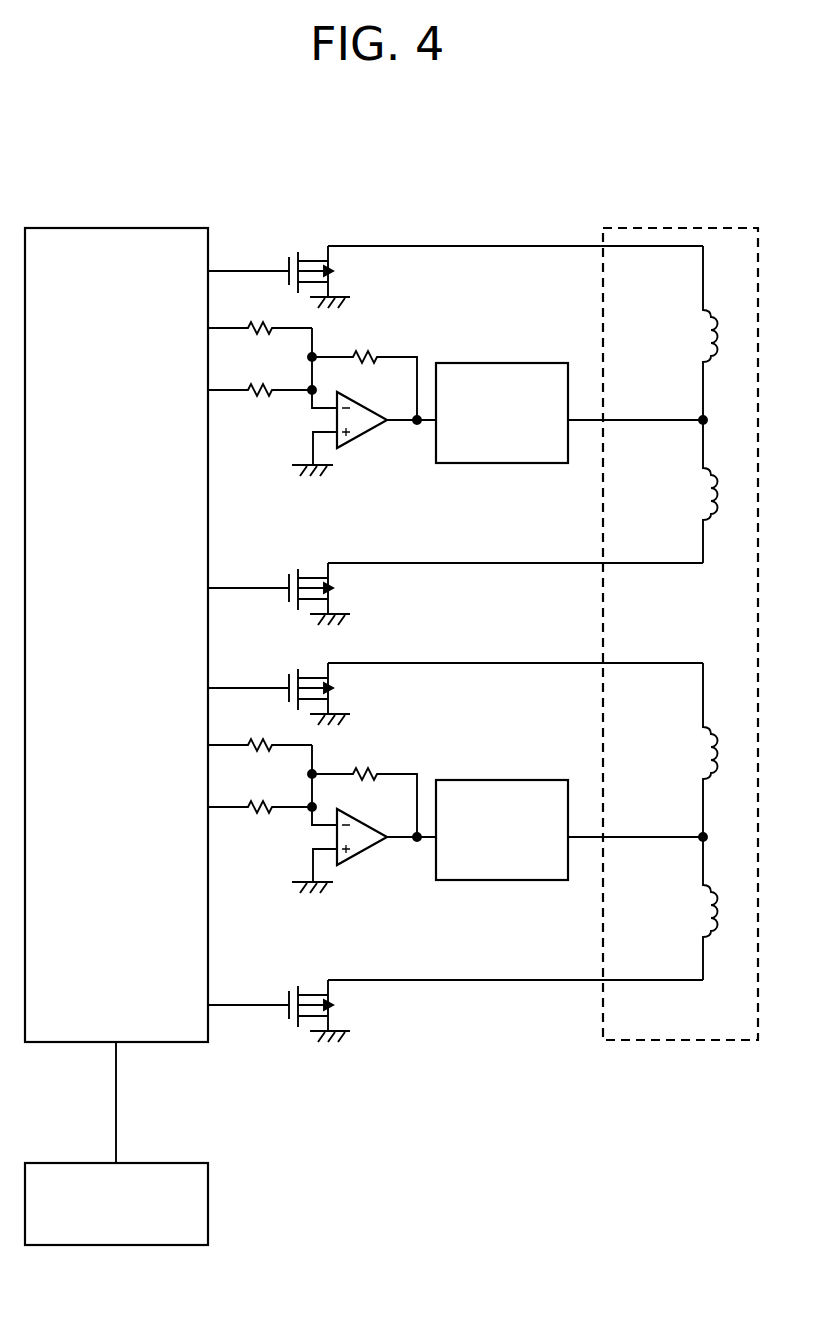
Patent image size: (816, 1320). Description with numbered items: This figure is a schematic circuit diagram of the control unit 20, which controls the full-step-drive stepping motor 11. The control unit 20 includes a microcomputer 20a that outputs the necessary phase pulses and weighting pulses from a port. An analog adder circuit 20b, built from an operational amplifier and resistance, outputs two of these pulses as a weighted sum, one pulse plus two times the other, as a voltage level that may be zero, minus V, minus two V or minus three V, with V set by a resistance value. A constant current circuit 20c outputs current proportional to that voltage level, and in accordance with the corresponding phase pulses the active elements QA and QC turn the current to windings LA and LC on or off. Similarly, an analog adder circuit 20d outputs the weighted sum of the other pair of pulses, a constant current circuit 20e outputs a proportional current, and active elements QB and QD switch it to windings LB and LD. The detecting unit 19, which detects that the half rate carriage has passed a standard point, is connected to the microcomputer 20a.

The control unit 20 is at (350, 203).
The microcomputer 20a is at (98, 228).
The analog adder circuit 20b is at (322, 819).
The constant current circuit 20c is at (571, 861).
The analog adder circuit 20d is at (298, 420).
The constant current circuit 20e is at (490, 463).
The stepping motor 11 is at (688, 228).
The detecting unit 19 is at (88, 1245).